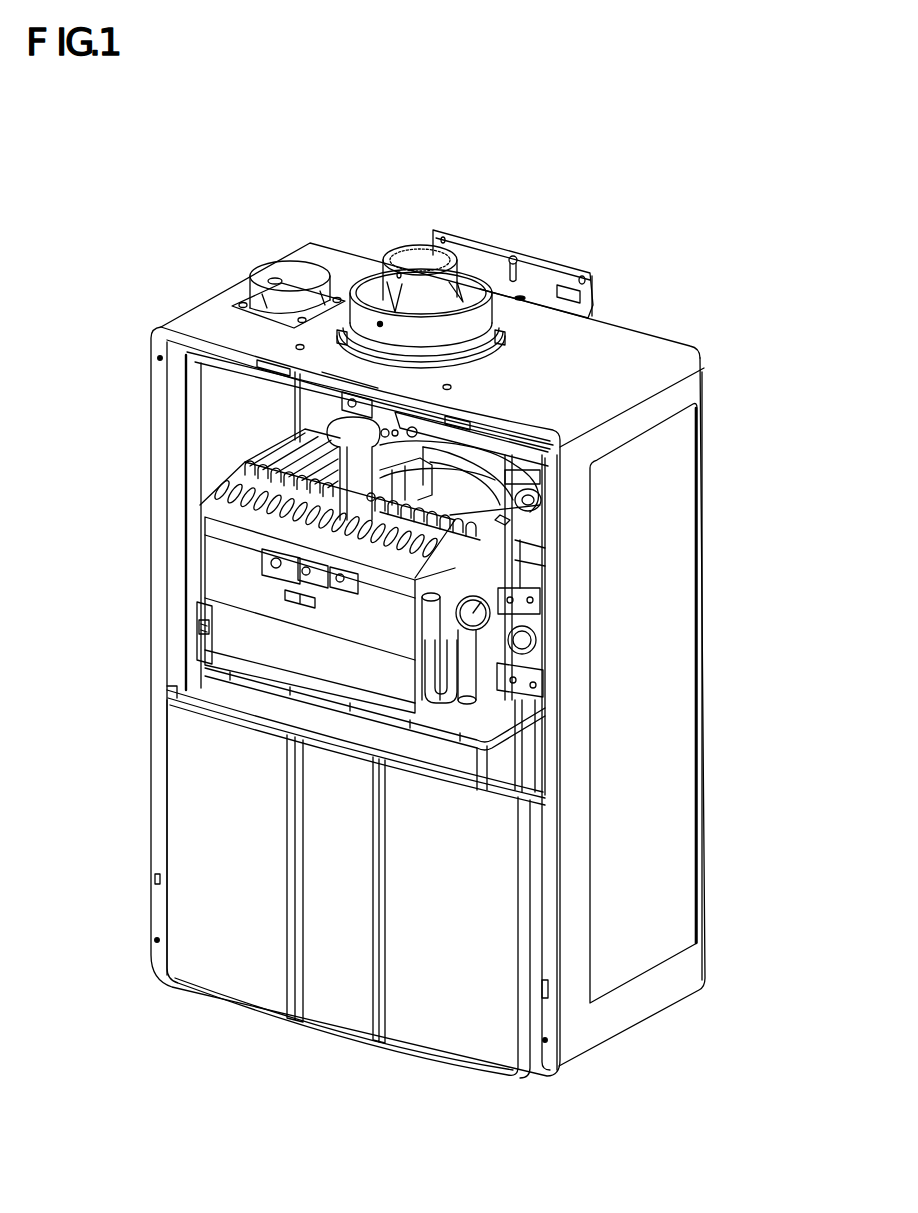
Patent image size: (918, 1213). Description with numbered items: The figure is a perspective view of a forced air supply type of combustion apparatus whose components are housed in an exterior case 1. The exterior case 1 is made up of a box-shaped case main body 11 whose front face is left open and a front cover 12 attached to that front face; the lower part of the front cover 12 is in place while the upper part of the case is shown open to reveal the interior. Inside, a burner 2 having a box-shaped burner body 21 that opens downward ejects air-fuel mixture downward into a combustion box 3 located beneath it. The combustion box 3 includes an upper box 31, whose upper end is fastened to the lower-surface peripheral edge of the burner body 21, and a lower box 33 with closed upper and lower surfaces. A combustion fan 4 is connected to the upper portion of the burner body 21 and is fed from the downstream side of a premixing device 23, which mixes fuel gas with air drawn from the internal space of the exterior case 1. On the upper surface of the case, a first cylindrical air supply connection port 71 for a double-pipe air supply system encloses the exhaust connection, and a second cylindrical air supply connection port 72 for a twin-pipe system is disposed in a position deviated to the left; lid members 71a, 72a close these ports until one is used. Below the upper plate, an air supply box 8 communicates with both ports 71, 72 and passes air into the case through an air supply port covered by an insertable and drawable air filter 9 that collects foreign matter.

The exterior case 1 is at (663, 588).
The case main body 11 is at (664, 677).
The front cover 12 is at (216, 823).
The burner 2 is at (248, 460).
The burner body 21 is at (247, 488).
The premixing device 23 is at (432, 655).
The combustion box 3 is at (255, 607).
The upper box 31 is at (234, 643).
The lower box 33 is at (264, 711).
The combustion fan 4 is at (545, 496).
The first air supply connection port 71 is at (478, 325).
The lid member 71a is at (473, 284).
The second air supply connection port 72 is at (252, 289).
The lid member 72a is at (282, 266).
The air supply box 8 is at (262, 371).
The air filter 9 is at (419, 447).